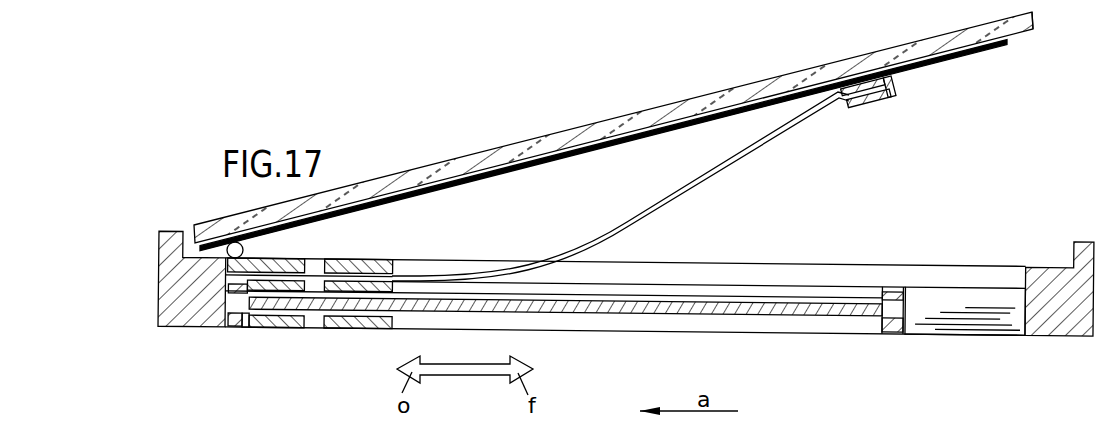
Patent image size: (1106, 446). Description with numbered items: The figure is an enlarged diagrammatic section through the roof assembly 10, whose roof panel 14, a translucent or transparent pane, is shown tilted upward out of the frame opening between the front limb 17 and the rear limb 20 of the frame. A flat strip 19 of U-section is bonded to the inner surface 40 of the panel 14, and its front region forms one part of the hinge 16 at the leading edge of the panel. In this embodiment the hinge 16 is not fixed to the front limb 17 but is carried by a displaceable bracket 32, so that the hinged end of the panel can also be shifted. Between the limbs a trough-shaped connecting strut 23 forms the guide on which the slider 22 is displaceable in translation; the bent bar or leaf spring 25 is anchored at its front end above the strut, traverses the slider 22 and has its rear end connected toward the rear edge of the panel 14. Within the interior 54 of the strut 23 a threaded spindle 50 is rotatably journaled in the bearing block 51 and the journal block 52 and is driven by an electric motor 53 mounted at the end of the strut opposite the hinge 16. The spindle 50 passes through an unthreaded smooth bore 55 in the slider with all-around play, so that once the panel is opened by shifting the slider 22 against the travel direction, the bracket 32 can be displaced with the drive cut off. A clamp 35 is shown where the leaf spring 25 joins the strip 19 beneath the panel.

The assembly 10 is at (506, 137).
The roof panel 14 is at (593, 115).
The hinge 16 is at (243, 249).
The front limb 17 is at (175, 250).
The flat strip 19 is at (648, 134).
The rear limb 20 is at (1062, 285).
The slider 22 is at (374, 253).
The connecting strut 23 is at (806, 345).
The leaf spring 25 is at (792, 153).
The bracket 32 is at (261, 345).
The clamp 35 is at (873, 114).
The inner surface 40 is at (1029, 32).
The threaded spindle 50 is at (703, 298).
The bearing block 51 is at (233, 330).
The journal block 52 is at (893, 333).
The electric motor 53 is at (1008, 322).
The interior 54 is at (603, 325).
The unthreaded bore 55 is at (287, 330).